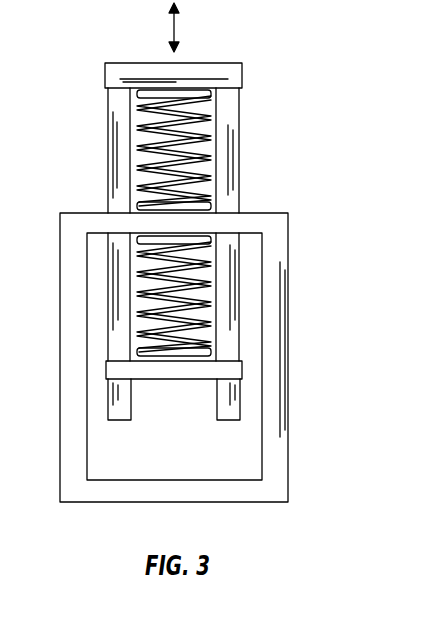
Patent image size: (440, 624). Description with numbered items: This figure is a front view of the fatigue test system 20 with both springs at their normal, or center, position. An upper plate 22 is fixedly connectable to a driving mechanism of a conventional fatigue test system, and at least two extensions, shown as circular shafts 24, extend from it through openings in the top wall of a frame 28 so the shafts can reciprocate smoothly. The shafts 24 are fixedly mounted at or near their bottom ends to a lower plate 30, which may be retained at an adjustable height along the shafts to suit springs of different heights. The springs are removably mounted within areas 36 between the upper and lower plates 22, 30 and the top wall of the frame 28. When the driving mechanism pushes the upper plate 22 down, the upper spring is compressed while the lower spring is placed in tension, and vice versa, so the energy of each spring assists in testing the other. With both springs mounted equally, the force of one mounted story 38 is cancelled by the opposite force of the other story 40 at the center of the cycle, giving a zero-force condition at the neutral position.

The system 20 is at (267, 44).
The upper plate 22 is at (127, 63).
The shafts 24 is at (115, 158).
The frame 28 is at (274, 397).
The lower plate 30 is at (237, 371).
The areas 36 is at (212, 130).
The story 38 is at (212, 277).
The story 40 is at (212, 177).